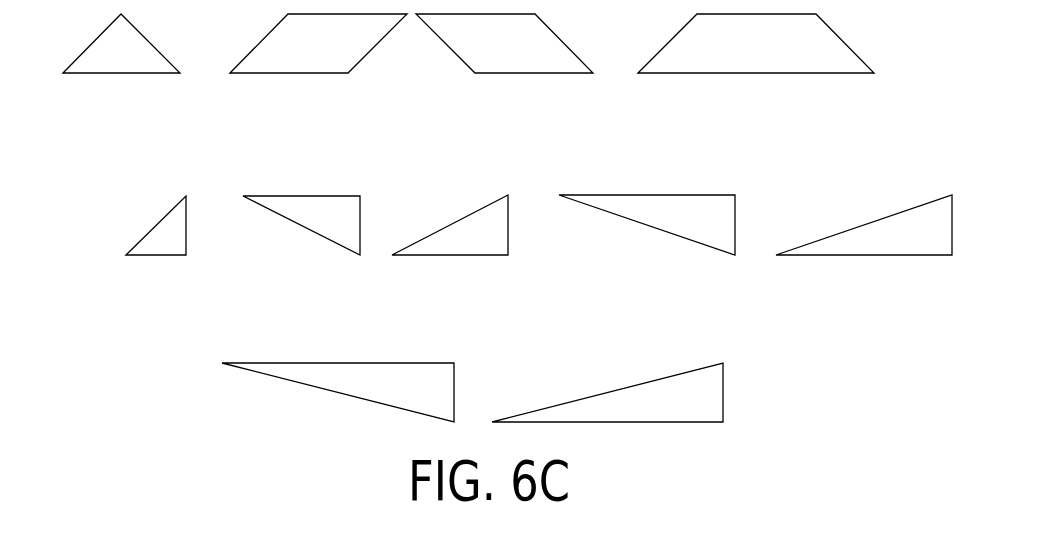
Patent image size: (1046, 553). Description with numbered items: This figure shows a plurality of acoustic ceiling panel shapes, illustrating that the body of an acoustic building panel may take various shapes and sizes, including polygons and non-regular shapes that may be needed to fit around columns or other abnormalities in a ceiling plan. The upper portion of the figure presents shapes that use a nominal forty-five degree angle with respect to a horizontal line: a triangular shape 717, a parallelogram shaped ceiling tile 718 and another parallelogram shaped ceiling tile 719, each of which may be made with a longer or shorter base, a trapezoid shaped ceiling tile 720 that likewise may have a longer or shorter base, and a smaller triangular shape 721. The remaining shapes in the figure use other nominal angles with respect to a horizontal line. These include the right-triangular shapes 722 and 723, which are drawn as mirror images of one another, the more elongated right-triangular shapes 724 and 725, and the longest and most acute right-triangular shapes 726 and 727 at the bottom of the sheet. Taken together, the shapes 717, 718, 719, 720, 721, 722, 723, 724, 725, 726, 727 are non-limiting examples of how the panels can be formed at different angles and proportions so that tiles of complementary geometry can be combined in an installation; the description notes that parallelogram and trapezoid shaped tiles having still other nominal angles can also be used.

The ceiling panel shape 717 is at (99, 66).
The parallelogram shaped ceiling tile 718 is at (294, 58).
The parallelogram shaped ceiling tile 719 is at (487, 58).
The trapezoid shaped ceiling tile 720 is at (729, 58).
The ceiling panel shape 721 is at (165, 239).
The ceiling panel shape 722 is at (317, 213).
The ceiling panel shape 723 is at (460, 233).
The ceiling panel shape 724 is at (685, 230).
The ceiling panel shape 725 is at (945, 247).
The ceiling panel shape 726 is at (441, 395).
The ceiling panel shape 727 is at (666, 413).